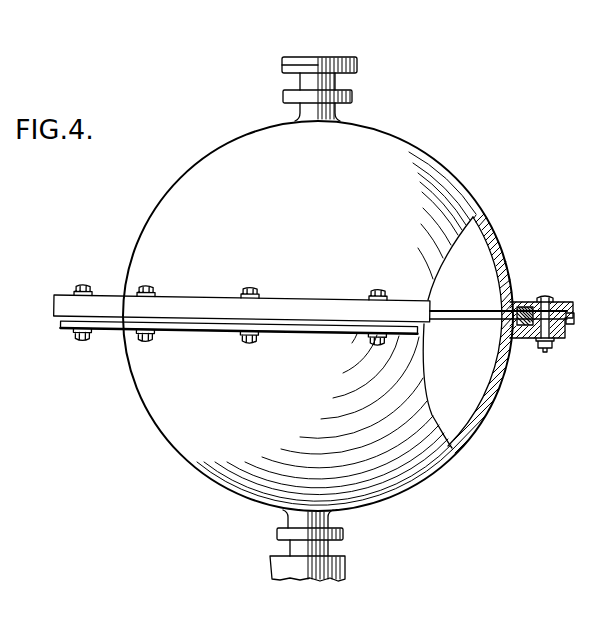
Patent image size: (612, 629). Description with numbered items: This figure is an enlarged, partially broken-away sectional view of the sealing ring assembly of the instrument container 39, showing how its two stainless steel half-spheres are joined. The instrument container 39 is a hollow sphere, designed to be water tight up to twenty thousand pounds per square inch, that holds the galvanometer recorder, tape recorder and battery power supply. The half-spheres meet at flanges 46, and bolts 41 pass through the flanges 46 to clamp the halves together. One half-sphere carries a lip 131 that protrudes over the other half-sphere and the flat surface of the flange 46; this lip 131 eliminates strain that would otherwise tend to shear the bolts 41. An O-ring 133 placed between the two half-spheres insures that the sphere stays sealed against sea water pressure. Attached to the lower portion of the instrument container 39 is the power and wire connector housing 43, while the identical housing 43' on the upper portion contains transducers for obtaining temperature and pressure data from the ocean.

The instrument container 39 is at (140, 231).
The bolts 41 is at (83, 286).
The power and wire connector housing 43 is at (291, 545).
The housing 43' is at (343, 89).
The flanges 46 is at (563, 330).
The lip 131 is at (574, 318).
The O-ring 133 is at (528, 305).